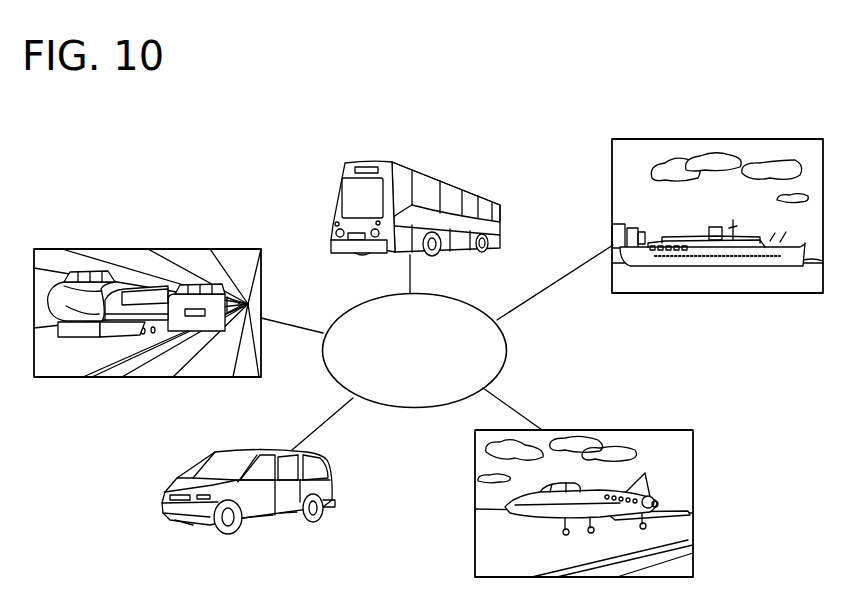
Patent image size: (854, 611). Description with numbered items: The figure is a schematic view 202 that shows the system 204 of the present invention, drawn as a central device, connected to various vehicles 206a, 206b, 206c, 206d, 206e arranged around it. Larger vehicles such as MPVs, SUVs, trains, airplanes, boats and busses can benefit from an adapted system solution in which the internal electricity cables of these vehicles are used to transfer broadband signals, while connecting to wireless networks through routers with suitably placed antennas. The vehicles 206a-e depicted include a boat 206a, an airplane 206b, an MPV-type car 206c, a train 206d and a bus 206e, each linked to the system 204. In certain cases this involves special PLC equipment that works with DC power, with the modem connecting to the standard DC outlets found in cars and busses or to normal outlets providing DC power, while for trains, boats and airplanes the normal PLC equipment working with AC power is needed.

The schematic view 202 is at (163, 175).
The system 204 is at (459, 318).
The vehicle 206a is at (672, 147).
The vehicle 206b is at (640, 435).
The vehicle 206c is at (289, 508).
The vehicle 206d is at (186, 355).
The vehicle 206e is at (450, 188).